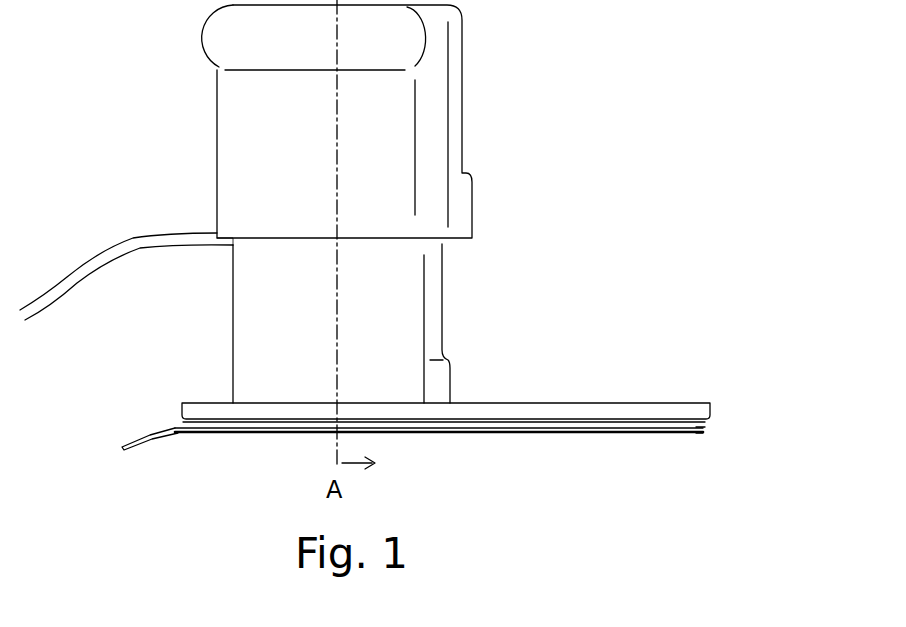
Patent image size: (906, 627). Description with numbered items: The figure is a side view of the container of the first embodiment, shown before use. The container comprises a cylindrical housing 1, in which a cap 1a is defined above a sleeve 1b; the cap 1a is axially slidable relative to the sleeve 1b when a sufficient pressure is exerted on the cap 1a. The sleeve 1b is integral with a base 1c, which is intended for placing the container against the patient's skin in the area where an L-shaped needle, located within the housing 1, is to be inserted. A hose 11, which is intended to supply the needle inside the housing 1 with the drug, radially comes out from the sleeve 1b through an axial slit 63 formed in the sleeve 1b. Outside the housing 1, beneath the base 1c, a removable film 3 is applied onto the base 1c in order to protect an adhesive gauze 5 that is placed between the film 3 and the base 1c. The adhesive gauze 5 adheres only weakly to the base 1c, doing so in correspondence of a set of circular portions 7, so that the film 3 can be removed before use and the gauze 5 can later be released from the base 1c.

The cylindrical housing 1 is at (500, 198).
The cap 1a is at (462, 80).
The sleeve 1b is at (442, 322).
The base 1c is at (590, 403).
The removable film 3 is at (625, 434).
The adhesive gauze 5 is at (705, 427).
The circular portions 7 is at (210, 434).
The hose 11 is at (137, 248).
The axial slit 63 is at (227, 257).